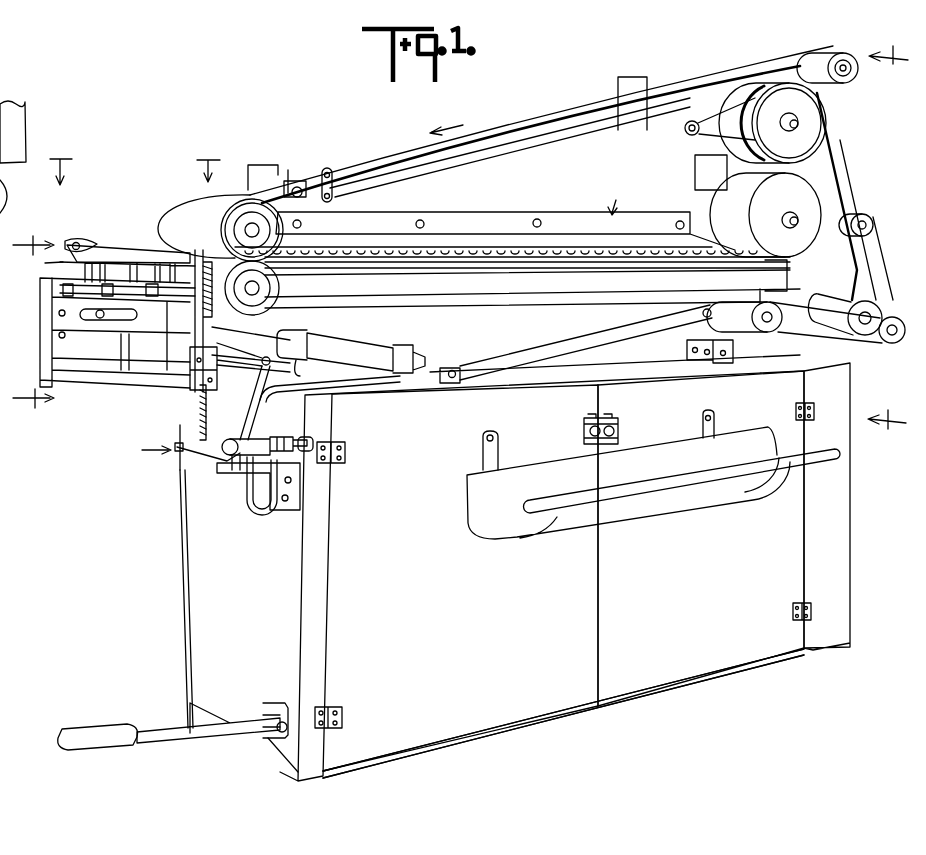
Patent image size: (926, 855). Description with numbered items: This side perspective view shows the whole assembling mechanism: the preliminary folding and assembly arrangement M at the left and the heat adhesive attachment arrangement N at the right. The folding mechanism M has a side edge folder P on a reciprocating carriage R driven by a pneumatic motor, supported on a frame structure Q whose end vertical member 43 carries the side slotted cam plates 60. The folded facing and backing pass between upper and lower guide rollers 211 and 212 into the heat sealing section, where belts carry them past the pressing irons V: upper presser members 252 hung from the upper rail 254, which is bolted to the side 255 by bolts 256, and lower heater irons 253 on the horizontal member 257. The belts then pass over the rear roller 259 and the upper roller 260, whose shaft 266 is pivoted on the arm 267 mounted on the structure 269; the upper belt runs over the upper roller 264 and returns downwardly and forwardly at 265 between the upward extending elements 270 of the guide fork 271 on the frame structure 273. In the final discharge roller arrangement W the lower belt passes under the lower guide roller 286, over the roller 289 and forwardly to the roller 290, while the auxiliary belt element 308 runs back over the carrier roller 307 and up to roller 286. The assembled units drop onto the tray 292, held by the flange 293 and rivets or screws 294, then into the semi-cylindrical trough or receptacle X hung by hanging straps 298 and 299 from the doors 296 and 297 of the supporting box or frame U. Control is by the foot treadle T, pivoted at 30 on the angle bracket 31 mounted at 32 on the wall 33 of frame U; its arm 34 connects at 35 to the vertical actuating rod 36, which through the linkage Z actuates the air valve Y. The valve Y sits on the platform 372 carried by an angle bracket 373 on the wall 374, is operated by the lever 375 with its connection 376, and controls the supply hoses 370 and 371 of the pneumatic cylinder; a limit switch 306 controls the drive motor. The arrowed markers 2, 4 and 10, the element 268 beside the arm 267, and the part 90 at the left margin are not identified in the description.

The control unit 90 is at (13, 136).
The section line 2- 2 is at (135, 157).
The section line 4- 4 is at (33, 322).
The section line 10- 10 is at (888, 237).
The wall 33 is at (306, 585).
The door 296 is at (440, 613).
The door 297 is at (693, 583).
The supporting box or frame U is at (663, 672).
The receptacle X is at (652, 512).
The hanging strap 298 is at (483, 452).
The hanging strap 299 is at (714, 421).
The side of support structure 255 is at (540, 207).
The bolts 256 is at (422, 220).
The upper rail or carrier 254 is at (470, 272).
The lower heater irons 253 is at (363, 265).
The upper iron or presser member 252 is at (342, 268).
The horizontal member 257 is at (473, 280).
The upper guide roller 211 is at (244, 230).
The downward and forward belt run 265 is at (712, 76).
The structure 269 is at (621, 128).
The frame structure 273 is at (288, 178).
The upward extending elements 270 is at (328, 168).
The guide fork 271 is at (332, 193).
The upper roller 260 is at (812, 113).
The shaft 266 is at (800, 128).
The rear roller 259 is at (798, 197).
The upper roller 264 is at (851, 80).
The pivot link 268 is at (690, 136).
The arm 267 is at (695, 170).
The lower guide roller 286 is at (868, 213).
The final discharge roller arrangement W is at (875, 220).
The auxiliary belt element 308 is at (884, 258).
The roller 289 is at (888, 343).
The carrier roller 307 is at (837, 356).
The roller 290 is at (770, 335).
The flange 293 is at (538, 356).
The tray 292 is at (568, 360).
The rivets or screws 294 is at (540, 308).
The heat adhesive attachment arrangement N is at (613, 193).
The pressing irons V is at (565, 250).
The side slotted cam plates 60 is at (68, 322).
The frame structure Q is at (45, 340).
The end vertical member 43 is at (52, 350).
The lateral folder P is at (140, 245).
The preliminary folding and assembly arrangement M is at (102, 232).
The carriage R is at (45, 263).
The lower guide roller 212 is at (240, 293).
The supply line 371 is at (270, 392).
The supply line 370 is at (250, 398).
The air valve Y is at (258, 436).
The limit switch 306 is at (313, 437).
The wall 374 is at (305, 523).
The angle bracket 373 is at (280, 506).
The platform 372 is at (237, 478).
The lever 375 is at (197, 468).
The connection 376 is at (178, 428).
The linkage Z is at (145, 452).
The vertical actuating rod 36 is at (183, 548).
The arm 34 is at (150, 742).
The connection 35 is at (203, 740).
The pivot 30 is at (278, 737).
The angle bracket 31 is at (266, 713).
The mounting 32 is at (284, 704).
The foot treadle T is at (97, 725).